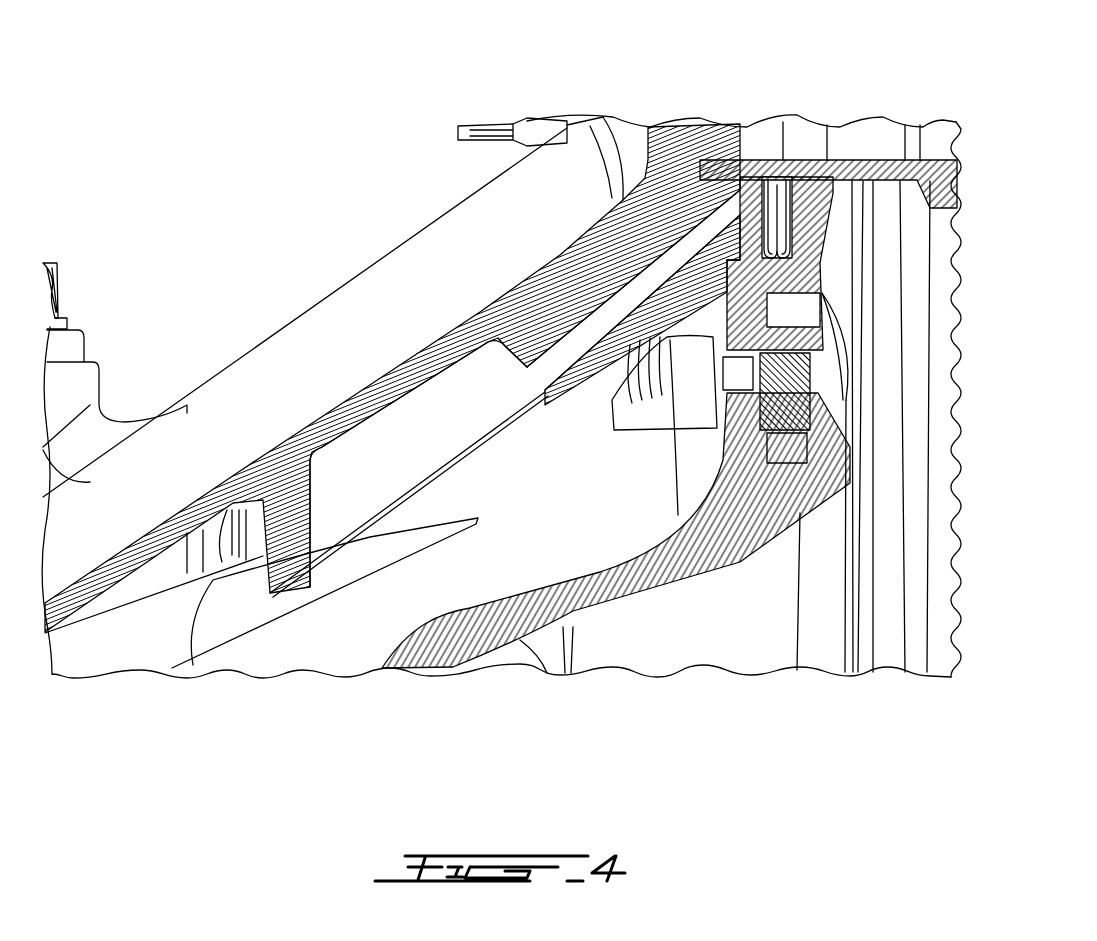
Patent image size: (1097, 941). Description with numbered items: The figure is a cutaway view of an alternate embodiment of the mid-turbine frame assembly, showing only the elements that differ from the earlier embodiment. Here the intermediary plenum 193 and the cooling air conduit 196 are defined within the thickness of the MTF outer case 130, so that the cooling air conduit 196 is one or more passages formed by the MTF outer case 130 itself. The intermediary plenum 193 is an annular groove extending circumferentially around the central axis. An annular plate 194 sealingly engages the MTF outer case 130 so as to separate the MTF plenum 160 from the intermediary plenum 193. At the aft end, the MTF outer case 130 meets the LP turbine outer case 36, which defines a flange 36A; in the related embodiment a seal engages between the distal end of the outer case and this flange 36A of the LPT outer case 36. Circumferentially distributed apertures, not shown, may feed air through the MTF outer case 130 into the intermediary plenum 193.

The MTF outer case 130 is at (235, 474).
The intermediary plenum 193 is at (425, 447).
The cooling air conduit 196 is at (617, 303).
The annular plate 194 is at (437, 495).
The MTF plenum 160 is at (557, 527).
The flange 36A is at (833, 165).
The LP turbine outer case 36 is at (898, 160).